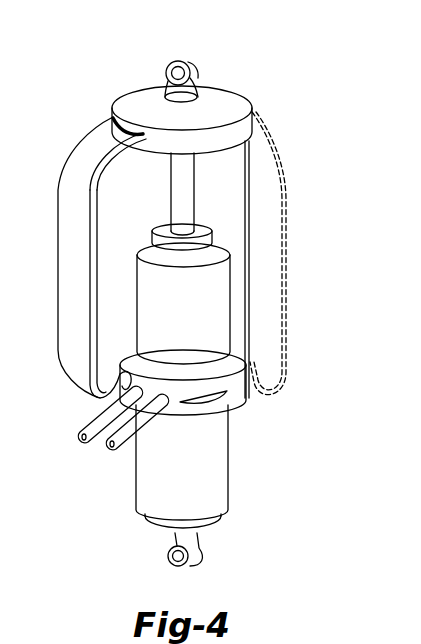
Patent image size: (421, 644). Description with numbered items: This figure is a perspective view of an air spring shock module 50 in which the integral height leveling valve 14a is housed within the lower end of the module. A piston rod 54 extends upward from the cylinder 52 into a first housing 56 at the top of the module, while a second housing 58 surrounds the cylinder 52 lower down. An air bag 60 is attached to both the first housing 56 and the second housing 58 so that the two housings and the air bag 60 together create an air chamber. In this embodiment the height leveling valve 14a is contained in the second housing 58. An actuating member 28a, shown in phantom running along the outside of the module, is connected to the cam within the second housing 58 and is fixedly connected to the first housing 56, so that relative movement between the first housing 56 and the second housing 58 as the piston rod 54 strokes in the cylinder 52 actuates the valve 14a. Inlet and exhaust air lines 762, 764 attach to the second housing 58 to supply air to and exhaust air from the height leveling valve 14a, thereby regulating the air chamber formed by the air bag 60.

The air spring shock module 50 is at (246, 72).
The cylinder 52 is at (207, 479).
The piston rod 54 is at (180, 186).
The first housing 56 is at (234, 136).
The second housing 58 is at (229, 407).
The air bag 60 is at (74, 333).
The actuating member 28a is at (282, 247).
The height leveling valve 14a is at (238, 393).
The inlet air line 762 is at (77, 438).
The exhaust air line 764 is at (112, 446).